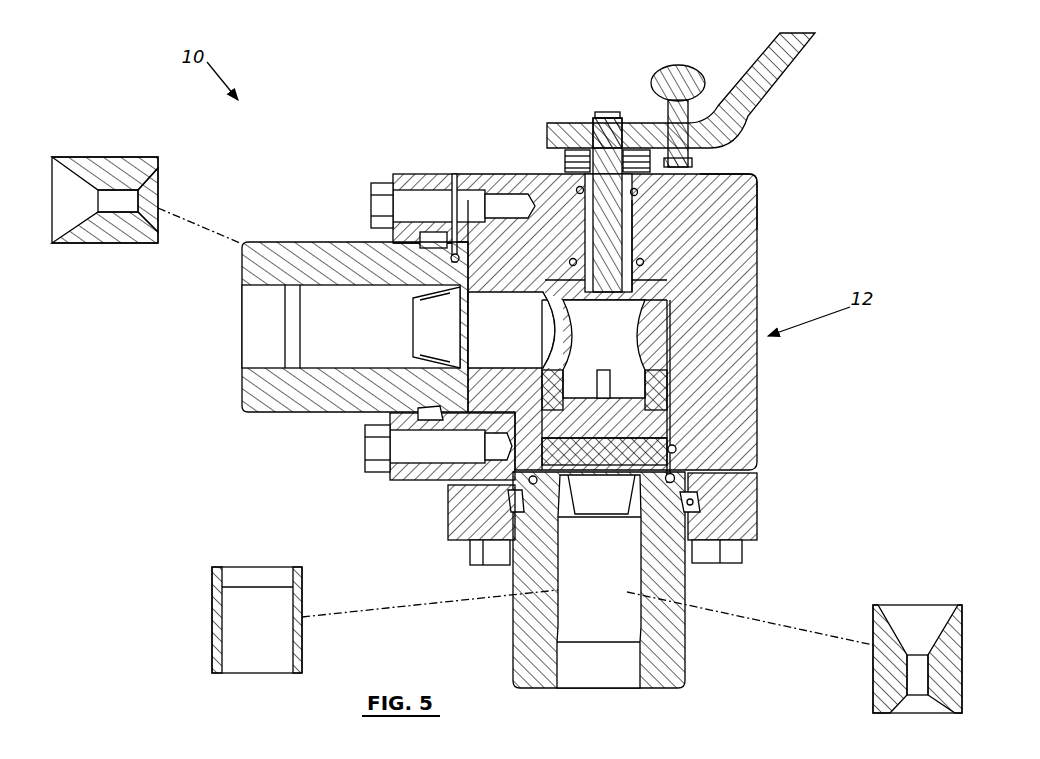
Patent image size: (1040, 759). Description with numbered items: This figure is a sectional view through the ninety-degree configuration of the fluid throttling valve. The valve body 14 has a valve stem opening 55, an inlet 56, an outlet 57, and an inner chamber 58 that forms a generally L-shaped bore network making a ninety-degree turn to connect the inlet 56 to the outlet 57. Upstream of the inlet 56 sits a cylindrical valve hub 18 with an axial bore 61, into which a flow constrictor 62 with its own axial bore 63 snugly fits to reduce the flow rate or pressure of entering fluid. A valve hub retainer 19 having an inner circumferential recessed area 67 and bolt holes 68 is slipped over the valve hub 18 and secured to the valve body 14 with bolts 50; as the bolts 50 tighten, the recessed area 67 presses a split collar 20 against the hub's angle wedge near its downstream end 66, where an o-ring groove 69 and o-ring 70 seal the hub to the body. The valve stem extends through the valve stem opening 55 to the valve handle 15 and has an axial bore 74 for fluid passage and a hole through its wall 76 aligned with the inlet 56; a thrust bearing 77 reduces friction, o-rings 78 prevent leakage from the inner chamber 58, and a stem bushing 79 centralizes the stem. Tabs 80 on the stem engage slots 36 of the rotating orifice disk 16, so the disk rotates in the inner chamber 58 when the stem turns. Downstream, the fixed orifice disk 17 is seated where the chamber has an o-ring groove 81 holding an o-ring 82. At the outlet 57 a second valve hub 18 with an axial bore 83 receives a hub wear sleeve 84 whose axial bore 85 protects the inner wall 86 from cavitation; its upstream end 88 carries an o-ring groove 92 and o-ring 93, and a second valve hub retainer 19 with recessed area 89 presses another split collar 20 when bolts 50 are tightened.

The valve body 14 is at (759, 174).
The valve handle 15 is at (720, 106).
The rotating orifice disk 16 is at (668, 443).
The fixed orifice disk 17 is at (758, 472).
The valve hub 18 is at (241, 242).
The valve hub retainer 19 is at (428, 177).
The valve hub split collar 20 is at (418, 412).
The slots 36 is at (668, 432).
The bolts 50 is at (378, 192).
The valve stem opening 55 is at (577, 197).
The inlet 56 is at (415, 337).
The outlet 57 is at (590, 478).
The inner chamber 58 is at (511, 330).
The axial bore 61 is at (351, 326).
The flow constrictor 62 is at (96, 157).
The axial bore 63 is at (98, 201).
The downstream end 66 is at (415, 303).
The inner circumferential recessed area 67 is at (422, 238).
The bolt holes 68 is at (420, 178).
The o-ring groove 69 is at (452, 225).
The o-ring 70 is at (456, 262).
The axial bore 74 is at (594, 345).
The wall 76 is at (656, 315).
The thrust bearing 77 is at (670, 280).
The o-rings 78 is at (578, 168).
The stem bushing 79 is at (638, 228).
The tabs 80 is at (667, 420).
The o-ring groove 81 is at (672, 447).
The o-ring 82 is at (678, 452).
The axial bore 83 is at (598, 660).
The hub wear sleeve 84 is at (212, 628).
The axial bore 85 is at (585, 658).
The inner wall 86 is at (648, 563).
The upstream end 88 is at (617, 482).
The inner circumferential recessed area 89 is at (478, 496).
The o-ring groove 92 is at (677, 479).
The o-ring 93 is at (697, 503).